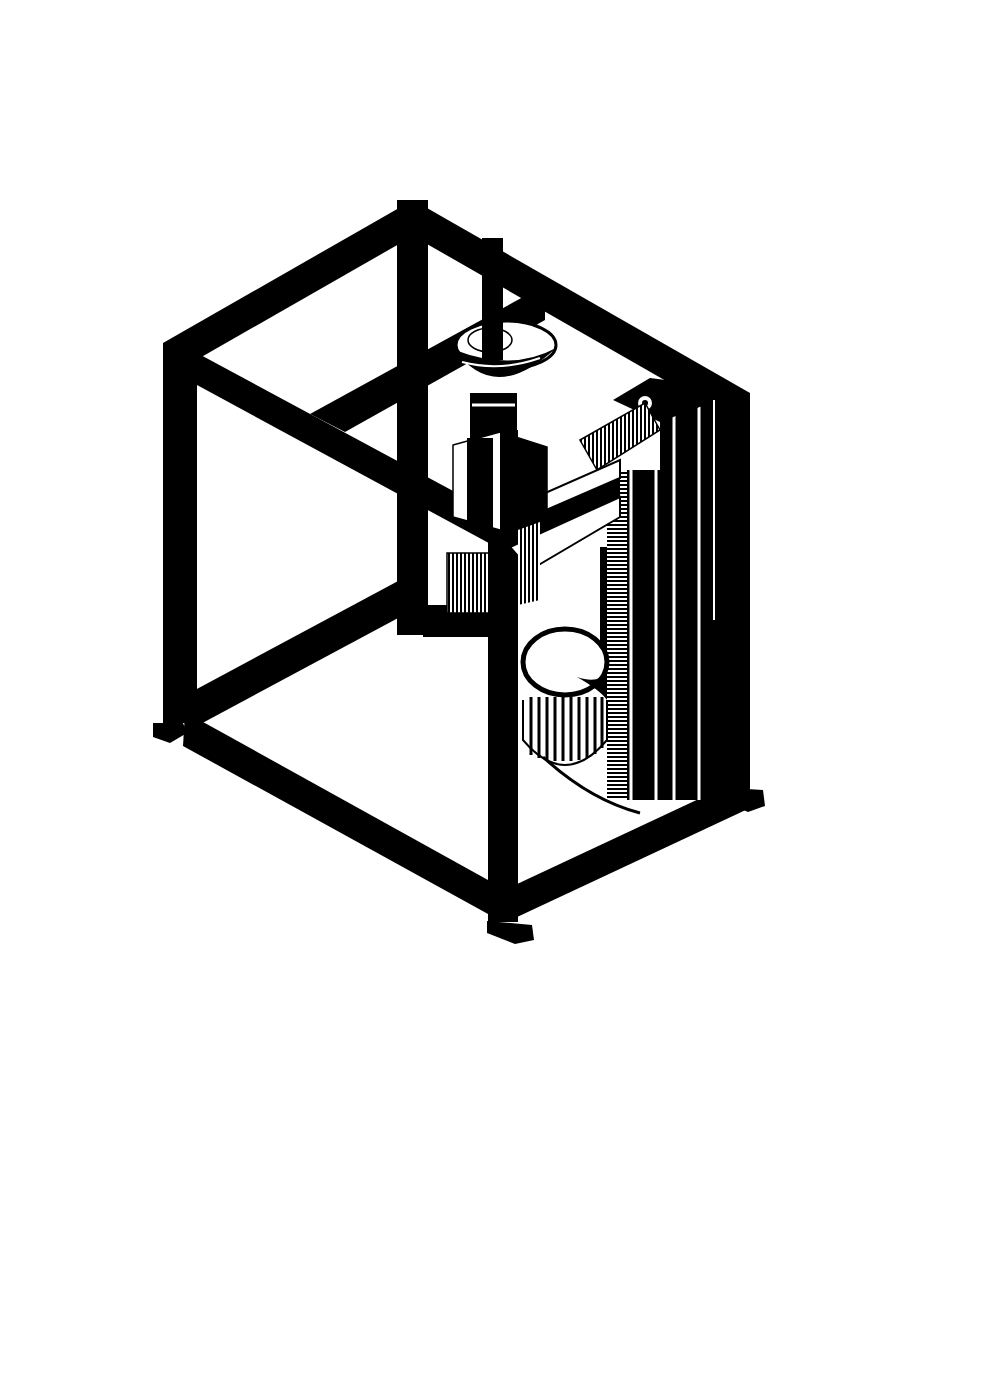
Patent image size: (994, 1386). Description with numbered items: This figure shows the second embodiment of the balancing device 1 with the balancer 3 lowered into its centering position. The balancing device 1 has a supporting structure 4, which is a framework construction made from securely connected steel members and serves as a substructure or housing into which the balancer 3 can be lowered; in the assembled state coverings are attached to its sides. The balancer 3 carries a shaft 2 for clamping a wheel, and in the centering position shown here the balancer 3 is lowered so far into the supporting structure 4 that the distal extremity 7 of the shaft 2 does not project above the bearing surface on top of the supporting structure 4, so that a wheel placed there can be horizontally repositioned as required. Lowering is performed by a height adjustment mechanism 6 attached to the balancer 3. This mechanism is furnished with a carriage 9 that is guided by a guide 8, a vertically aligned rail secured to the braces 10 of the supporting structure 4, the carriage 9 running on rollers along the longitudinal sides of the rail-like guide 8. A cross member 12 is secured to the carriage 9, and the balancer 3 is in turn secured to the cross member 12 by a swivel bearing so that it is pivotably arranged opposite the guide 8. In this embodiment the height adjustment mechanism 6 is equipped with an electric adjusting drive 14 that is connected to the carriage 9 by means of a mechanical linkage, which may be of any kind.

The balancing device 1 is at (325, 190).
The shaft 2 is at (560, 284).
The balancer 3 is at (377, 647).
The supporting structure 4 is at (163, 562).
The height adjustment mechanism 6 is at (575, 815).
The distal extremity 7 is at (500, 232).
The guide 8 is at (748, 696).
The carriage 9 is at (748, 477).
The braces 10 is at (748, 564).
The cross member 12 is at (577, 480).
The electric adjusting drive 14 is at (538, 772).